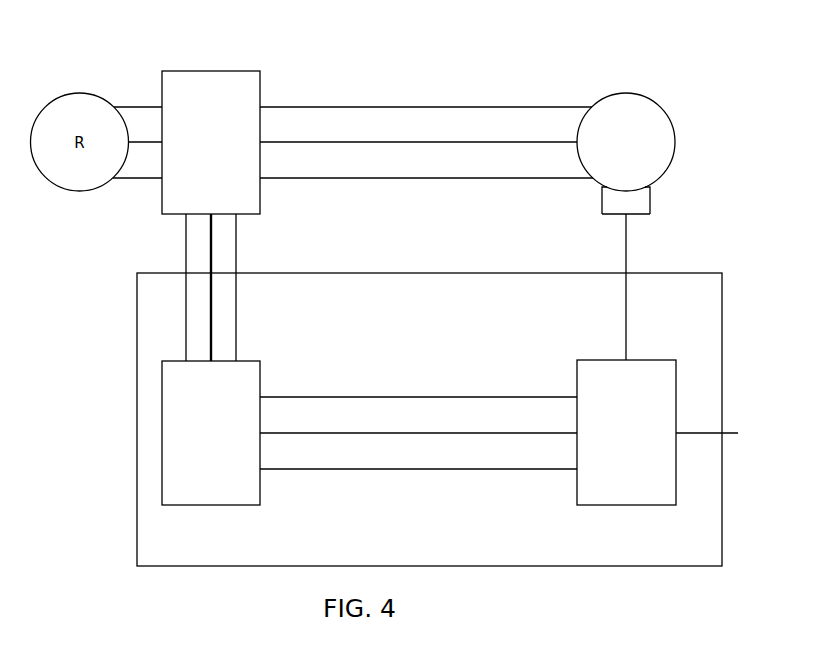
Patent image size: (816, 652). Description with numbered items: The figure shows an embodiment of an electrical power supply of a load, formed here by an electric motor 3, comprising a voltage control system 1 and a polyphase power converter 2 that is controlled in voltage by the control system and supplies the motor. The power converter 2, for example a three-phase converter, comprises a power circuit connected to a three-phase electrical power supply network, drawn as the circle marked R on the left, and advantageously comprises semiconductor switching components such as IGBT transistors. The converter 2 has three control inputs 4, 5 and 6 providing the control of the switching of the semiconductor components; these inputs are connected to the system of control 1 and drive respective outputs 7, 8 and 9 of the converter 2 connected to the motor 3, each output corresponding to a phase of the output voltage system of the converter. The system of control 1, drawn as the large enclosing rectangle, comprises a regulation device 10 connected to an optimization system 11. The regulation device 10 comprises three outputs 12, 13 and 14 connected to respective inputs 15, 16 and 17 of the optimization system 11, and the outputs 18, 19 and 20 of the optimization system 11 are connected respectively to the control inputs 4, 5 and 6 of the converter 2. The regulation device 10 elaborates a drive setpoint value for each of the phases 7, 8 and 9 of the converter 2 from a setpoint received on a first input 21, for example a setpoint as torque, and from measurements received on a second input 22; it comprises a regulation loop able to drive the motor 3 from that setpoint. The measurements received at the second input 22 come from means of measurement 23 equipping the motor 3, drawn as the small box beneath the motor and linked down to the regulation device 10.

The voltage control system 1 is at (122, 311).
The power converter 2 is at (214, 61).
The electric motor 3 is at (633, 81).
The control input 4 is at (186, 218).
The control input 5 is at (210, 218).
The control input 6 is at (236, 218).
The converter output 7 is at (262, 104).
The converter output 8 is at (262, 140).
The converter output 9 is at (262, 177).
The regulation device 10 is at (625, 507).
The optimization system 11 is at (208, 506).
The regulation device output 12 is at (575, 395).
The regulation device output 13 is at (575, 431).
The regulation device output 14 is at (575, 467).
The optimization system input 15 is at (262, 395).
The optimization system input 16 is at (262, 431).
The optimization system input 17 is at (262, 467).
The optimization system output 18 is at (186, 359).
The optimization system output 19 is at (210, 359).
The optimization system output 20 is at (236, 359).
The first input 21 is at (678, 432).
The second input 22 is at (628, 359).
The means of measurement 23 is at (650, 195).